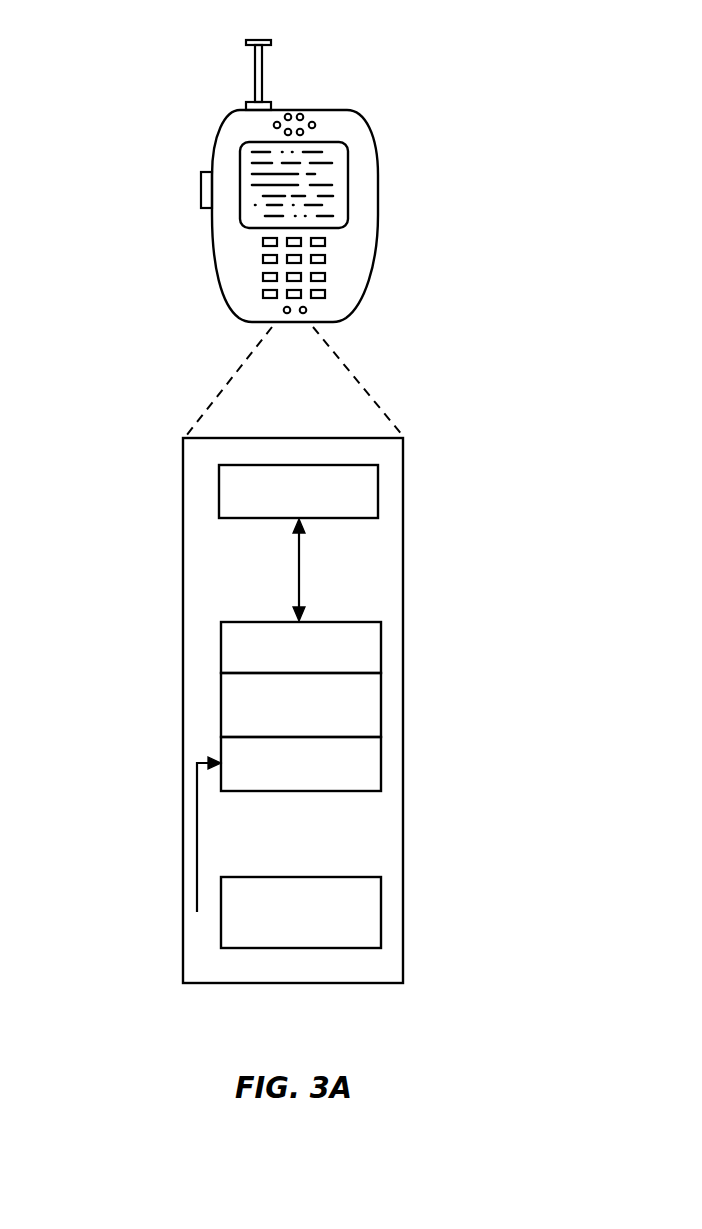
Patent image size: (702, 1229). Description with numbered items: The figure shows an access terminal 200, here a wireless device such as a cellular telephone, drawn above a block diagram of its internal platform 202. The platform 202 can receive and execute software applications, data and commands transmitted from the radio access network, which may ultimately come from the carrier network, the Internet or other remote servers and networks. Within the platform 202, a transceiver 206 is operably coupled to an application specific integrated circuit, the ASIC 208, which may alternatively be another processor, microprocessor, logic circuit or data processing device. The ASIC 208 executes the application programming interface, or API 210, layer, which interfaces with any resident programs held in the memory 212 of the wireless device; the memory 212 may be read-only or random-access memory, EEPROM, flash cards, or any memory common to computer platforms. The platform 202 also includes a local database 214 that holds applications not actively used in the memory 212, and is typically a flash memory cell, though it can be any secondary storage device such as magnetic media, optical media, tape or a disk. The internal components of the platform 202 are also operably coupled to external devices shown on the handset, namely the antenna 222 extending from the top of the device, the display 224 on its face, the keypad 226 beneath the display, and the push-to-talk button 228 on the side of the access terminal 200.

The access terminal 200 is at (356, 300).
The platform 202 is at (183, 622).
The transceiver 206 is at (378, 492).
The application specific integrated circuit (ASIC) 208 is at (381, 653).
The application programming interface (API) 210 is at (381, 702).
The memory 212 is at (381, 763).
The local database 214 is at (381, 897).
The antenna 222 is at (262, 53).
The display 224 is at (348, 171).
The keypad 226 is at (325, 259).
The push-to-talk button 228 is at (201, 182).